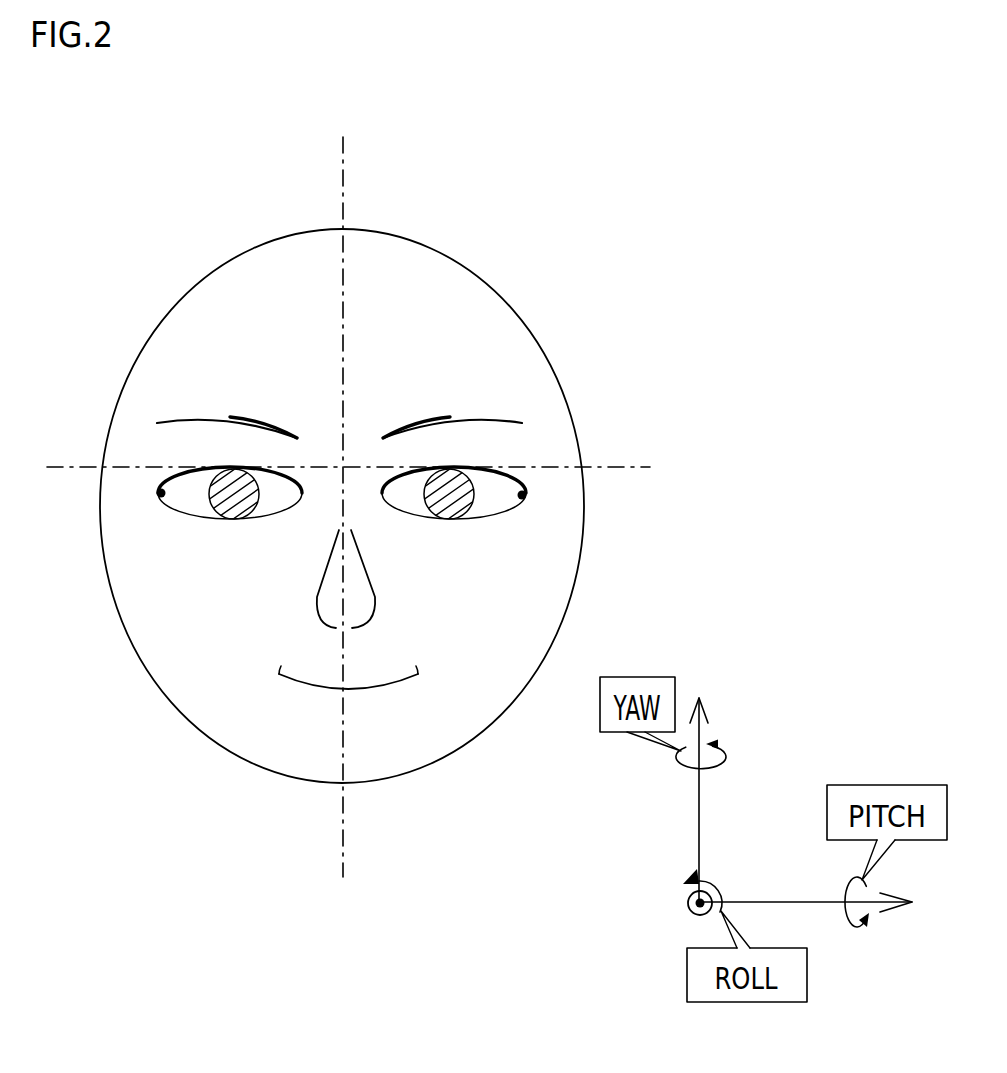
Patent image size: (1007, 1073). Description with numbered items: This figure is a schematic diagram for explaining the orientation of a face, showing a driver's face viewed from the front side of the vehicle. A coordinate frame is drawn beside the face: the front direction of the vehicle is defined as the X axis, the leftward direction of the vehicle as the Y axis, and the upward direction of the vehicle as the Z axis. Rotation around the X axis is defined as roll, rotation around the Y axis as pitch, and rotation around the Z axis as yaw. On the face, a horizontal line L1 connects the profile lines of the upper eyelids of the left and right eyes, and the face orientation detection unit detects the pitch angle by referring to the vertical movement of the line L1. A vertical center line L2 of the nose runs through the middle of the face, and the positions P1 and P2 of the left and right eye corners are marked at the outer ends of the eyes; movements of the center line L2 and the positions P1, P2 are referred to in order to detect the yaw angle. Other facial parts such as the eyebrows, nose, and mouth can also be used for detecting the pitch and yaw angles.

The line connecting the profile lines of the upper eyelids L1 is at (371, 469).
The center line of the nose L2 is at (342, 490).
The position of the left eye corner P1 is at (144, 515).
The position of the right eye corner P2 is at (541, 516).
The X axis X is at (687, 918).
The Y axis Y is at (818, 900).
The Z axis Z is at (698, 782).